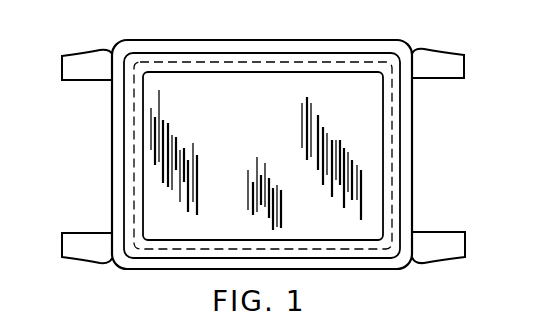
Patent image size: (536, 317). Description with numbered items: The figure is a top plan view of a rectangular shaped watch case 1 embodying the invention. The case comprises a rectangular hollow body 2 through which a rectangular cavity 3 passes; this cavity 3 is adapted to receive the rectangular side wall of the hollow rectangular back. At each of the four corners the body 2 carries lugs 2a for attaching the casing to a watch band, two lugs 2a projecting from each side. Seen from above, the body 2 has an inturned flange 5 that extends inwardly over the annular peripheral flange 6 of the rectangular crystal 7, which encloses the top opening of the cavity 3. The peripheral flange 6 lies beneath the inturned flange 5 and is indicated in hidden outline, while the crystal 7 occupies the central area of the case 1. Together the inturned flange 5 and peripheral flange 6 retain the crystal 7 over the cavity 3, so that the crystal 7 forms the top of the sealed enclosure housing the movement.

The watch case 1 is at (373, 32).
The hollow body 2 is at (193, 39).
The lugs 2a is at (82, 65).
The cavity 3 is at (100, 155).
The inturned flange 5 is at (388, 184).
The annular peripheral flange 6 is at (135, 106).
The crystal 7 is at (366, 142).